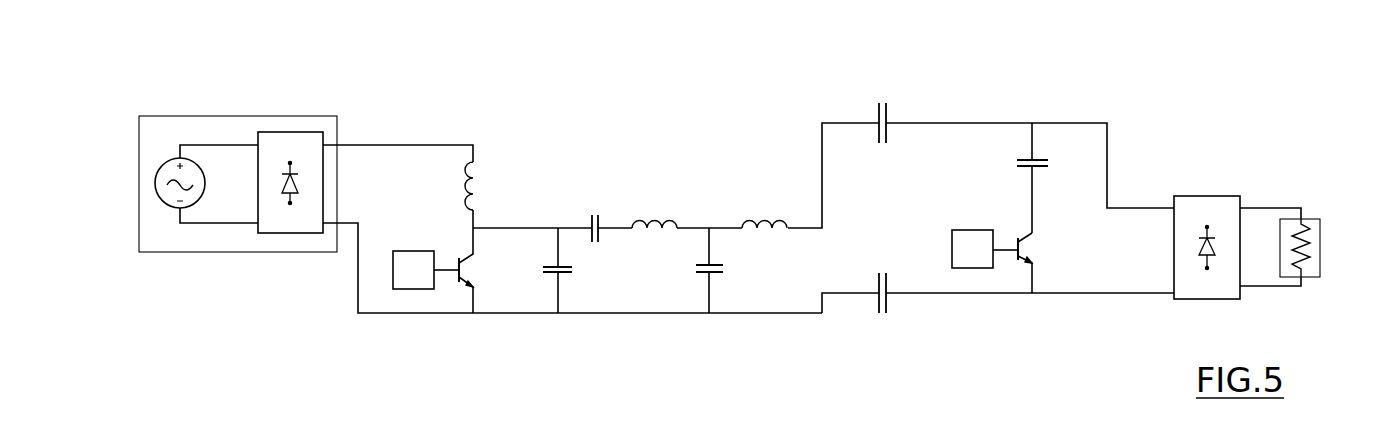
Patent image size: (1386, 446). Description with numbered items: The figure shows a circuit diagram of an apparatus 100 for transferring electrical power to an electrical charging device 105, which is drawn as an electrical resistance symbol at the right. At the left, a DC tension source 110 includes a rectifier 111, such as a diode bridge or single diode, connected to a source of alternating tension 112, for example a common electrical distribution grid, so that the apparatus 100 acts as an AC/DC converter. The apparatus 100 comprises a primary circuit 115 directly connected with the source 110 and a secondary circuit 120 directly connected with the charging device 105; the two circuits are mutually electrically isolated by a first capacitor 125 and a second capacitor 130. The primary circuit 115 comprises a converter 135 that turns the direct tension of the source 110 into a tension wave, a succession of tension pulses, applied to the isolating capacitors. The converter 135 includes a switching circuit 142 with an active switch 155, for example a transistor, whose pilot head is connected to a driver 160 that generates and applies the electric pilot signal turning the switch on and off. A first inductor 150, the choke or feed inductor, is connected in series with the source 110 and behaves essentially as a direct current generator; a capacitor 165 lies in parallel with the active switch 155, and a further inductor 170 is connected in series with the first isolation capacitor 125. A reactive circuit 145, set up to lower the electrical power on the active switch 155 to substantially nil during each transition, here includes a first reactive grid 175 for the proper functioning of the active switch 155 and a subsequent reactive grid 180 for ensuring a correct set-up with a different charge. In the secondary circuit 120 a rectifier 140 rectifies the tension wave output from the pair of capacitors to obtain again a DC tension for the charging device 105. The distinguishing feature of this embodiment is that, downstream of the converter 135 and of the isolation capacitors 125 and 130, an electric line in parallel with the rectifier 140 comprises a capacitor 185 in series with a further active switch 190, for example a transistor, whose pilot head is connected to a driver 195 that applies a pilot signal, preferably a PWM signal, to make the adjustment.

The apparatus 100 is at (1233, 107).
The electrical charging device 105 is at (1314, 231).
The DC tension source 110 is at (217, 125).
The rectifier 111 is at (287, 143).
The source of alternating tension 112 is at (173, 195).
The primary circuit 115 is at (587, 187).
The secondary circuit 120 is at (1122, 105).
The first capacitor 125 is at (885, 97).
The second capacitor 130 is at (887, 322).
The converter 135 is at (773, 117).
The rectifier 140 is at (1222, 206).
The switching circuit 142 is at (470, 328).
The reactive circuit 145 is at (604, 326).
The first inductor 150 is at (470, 172).
The active switch 155 is at (465, 285).
The driver 160 is at (408, 277).
The capacitor 165 is at (552, 274).
The further inductor 170 is at (647, 223).
The first reactive grid 175 is at (653, 327).
The subsequent reactive grid 180 is at (769, 323).
The capacitor 185 is at (1040, 158).
The further active switch 190 is at (1027, 240).
The driver 195 is at (967, 258).